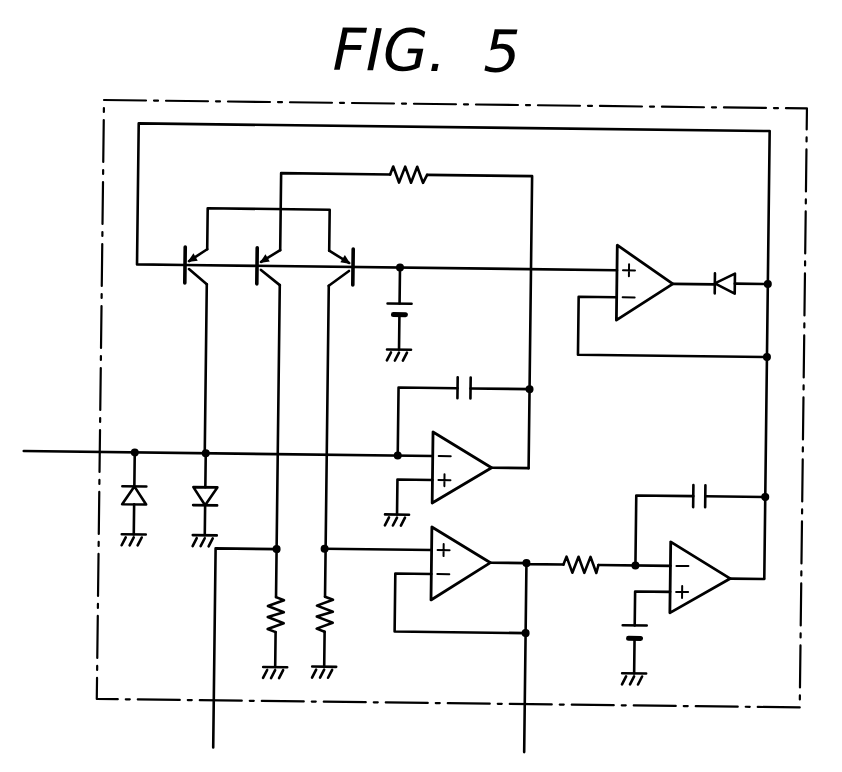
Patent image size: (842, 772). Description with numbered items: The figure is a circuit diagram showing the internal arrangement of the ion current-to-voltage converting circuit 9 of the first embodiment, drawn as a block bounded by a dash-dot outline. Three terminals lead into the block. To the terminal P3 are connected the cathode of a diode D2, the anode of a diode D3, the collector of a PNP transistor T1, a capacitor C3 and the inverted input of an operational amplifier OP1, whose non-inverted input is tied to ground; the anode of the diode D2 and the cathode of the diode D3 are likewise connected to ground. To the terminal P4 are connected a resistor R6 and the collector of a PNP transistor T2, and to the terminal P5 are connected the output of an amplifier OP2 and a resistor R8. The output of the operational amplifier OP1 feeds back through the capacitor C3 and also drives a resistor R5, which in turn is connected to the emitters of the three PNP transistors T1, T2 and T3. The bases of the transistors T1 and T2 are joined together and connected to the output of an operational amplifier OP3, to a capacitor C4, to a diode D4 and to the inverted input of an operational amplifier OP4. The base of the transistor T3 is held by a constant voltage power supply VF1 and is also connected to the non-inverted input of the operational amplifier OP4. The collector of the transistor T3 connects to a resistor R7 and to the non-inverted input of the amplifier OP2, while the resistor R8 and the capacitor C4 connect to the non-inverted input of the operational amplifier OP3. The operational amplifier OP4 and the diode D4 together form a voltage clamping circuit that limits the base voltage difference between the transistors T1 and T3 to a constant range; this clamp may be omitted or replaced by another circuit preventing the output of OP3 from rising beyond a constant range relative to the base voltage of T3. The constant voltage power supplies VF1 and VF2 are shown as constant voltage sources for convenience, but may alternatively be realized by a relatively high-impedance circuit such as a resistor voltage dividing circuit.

The ion current-to-voltage converting circuit 9 is at (764, 98).
The PNP transistor T1 is at (180, 276).
The PNP transistor T2 is at (250, 276).
The PNP transistor T3 is at (357, 240).
The resistor R5 is at (425, 155).
The resistor R6 is at (263, 615).
The resistor R7 is at (351, 612).
The resistor R8 is at (587, 547).
The capacitor C3 is at (465, 368).
The capacitor C4 is at (703, 476).
The diode D2 is at (150, 496).
The diode D3 is at (222, 496).
The diode D4 is at (723, 265).
The operational amplifier OP1 is at (472, 443).
The operational amplifier OP2 is at (472, 541).
The operational amplifier OP3 is at (715, 553).
The operational amplifier OP4 is at (655, 258).
The constant voltage power supply VF1 is at (422, 304).
The constant voltage power supply VF2 is at (656, 626).
The element P3 is at (72, 448).
The element P4 is at (227, 723).
The element P5 is at (535, 724).